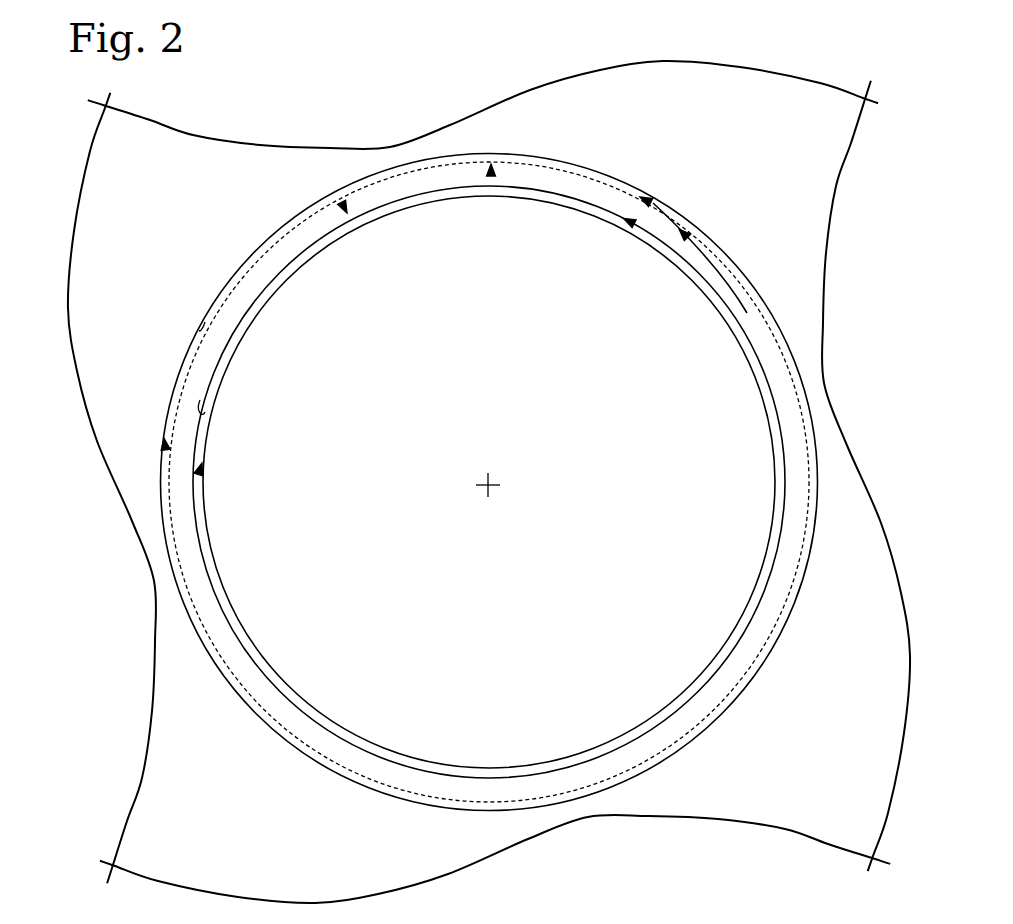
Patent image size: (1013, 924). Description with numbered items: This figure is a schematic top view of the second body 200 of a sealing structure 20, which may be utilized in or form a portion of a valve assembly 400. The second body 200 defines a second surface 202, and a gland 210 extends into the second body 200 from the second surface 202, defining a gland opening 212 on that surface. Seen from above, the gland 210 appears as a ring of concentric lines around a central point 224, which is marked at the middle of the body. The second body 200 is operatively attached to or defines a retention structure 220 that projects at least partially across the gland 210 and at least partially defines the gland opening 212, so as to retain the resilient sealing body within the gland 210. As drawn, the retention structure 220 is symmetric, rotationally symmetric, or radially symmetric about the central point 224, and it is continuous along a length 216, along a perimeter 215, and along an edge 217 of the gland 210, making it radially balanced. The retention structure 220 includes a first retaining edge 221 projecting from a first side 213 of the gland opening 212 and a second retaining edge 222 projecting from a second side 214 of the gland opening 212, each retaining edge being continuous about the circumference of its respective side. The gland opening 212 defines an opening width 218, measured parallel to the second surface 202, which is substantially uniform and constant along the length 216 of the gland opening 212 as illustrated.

The sealing structure 20 is at (843, 46).
The second body 200 is at (139, 622).
The second surface 202 is at (167, 196).
The gland 210 is at (398, 188).
The gland opening 212 is at (342, 203).
The first side 213 is at (200, 400).
The second side 214 is at (205, 322).
The perimeter 215 is at (646, 196).
The length 216 is at (718, 273).
The edge 217 is at (168, 440).
The opening width 218 is at (491, 176).
The retention structure 220 is at (247, 258).
The first retaining edge 221 is at (262, 300).
The second retaining edge 222 is at (168, 384).
The central point 224 is at (497, 492).
The valve assembly 400 is at (835, 33).